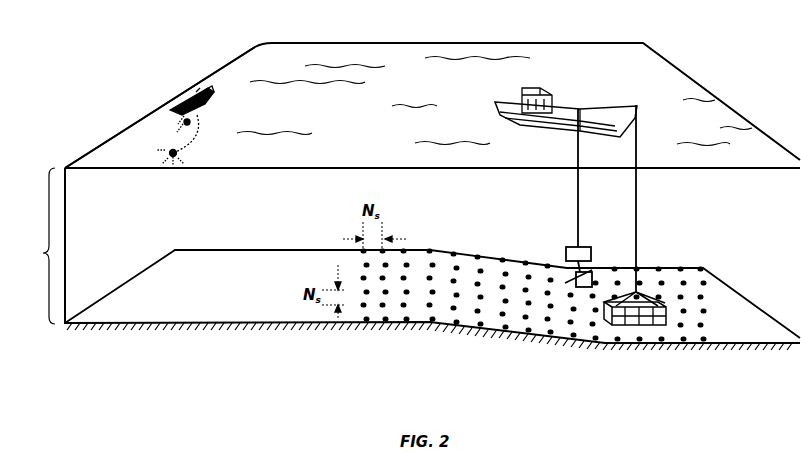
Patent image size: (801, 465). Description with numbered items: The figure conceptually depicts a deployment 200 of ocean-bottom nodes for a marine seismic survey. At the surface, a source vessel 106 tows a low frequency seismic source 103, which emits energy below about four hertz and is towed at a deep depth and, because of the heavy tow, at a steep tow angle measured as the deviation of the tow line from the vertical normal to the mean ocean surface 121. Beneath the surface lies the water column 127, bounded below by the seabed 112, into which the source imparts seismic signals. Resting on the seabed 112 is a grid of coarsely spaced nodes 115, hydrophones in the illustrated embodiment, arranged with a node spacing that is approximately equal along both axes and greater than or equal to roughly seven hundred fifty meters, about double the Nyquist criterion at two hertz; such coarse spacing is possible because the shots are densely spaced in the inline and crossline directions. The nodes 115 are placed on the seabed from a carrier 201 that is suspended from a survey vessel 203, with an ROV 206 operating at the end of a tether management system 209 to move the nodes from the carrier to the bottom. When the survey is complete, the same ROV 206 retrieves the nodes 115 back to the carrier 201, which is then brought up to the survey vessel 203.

The deployment 200 is at (258, 30).
The source vessel 106 is at (188, 97).
The low frequency seismic source 103 is at (168, 150).
The mean ocean surface 121 is at (82, 153).
The water column 127 is at (31, 246).
The seabed 112 is at (303, 250).
The nodes 115 is at (452, 250).
The survey vessel 203 is at (557, 97).
The tether management system 209 is at (580, 246).
The ROV 206 is at (592, 266).
The carrier 201 is at (668, 323).